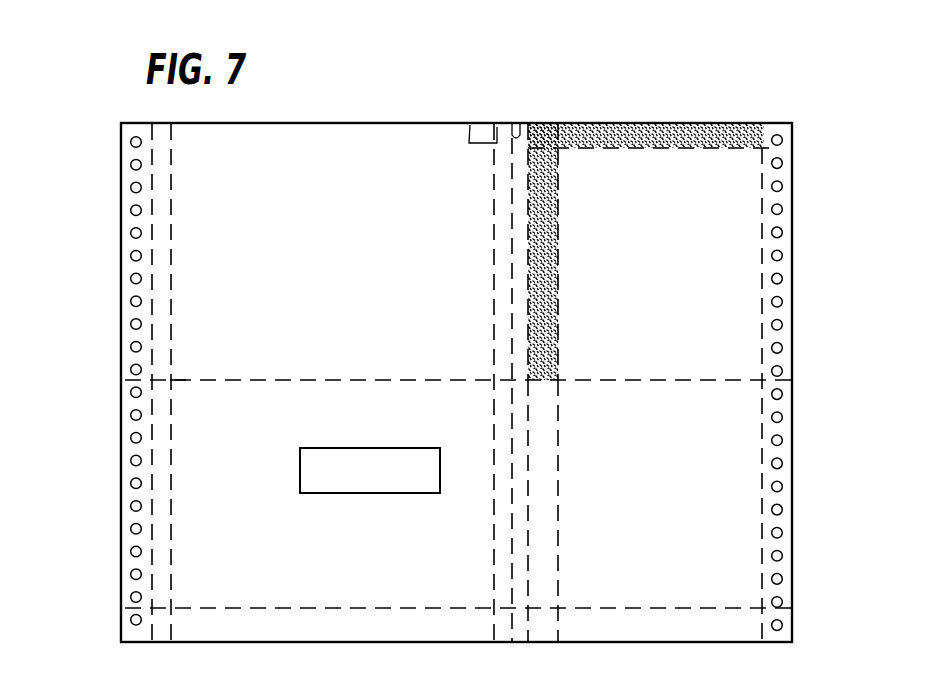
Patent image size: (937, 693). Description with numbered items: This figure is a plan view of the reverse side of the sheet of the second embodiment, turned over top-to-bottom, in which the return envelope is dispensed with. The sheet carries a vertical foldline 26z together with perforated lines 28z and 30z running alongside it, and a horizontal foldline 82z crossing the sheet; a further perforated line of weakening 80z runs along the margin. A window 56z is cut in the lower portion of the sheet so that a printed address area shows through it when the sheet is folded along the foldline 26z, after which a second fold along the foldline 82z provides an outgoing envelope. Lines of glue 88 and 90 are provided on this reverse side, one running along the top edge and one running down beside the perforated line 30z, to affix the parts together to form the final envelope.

The perforated line of weakening 80z is at (170, 263).
The horizontal foldline 82z is at (170, 382).
The perforated line 28z is at (470, 125).
The vertical foldline 26z is at (534, 96).
The perforated line 30z is at (537, 158).
The line of glue 88 is at (683, 140).
The line of glue 90 is at (556, 199).
The window 56z is at (377, 483).